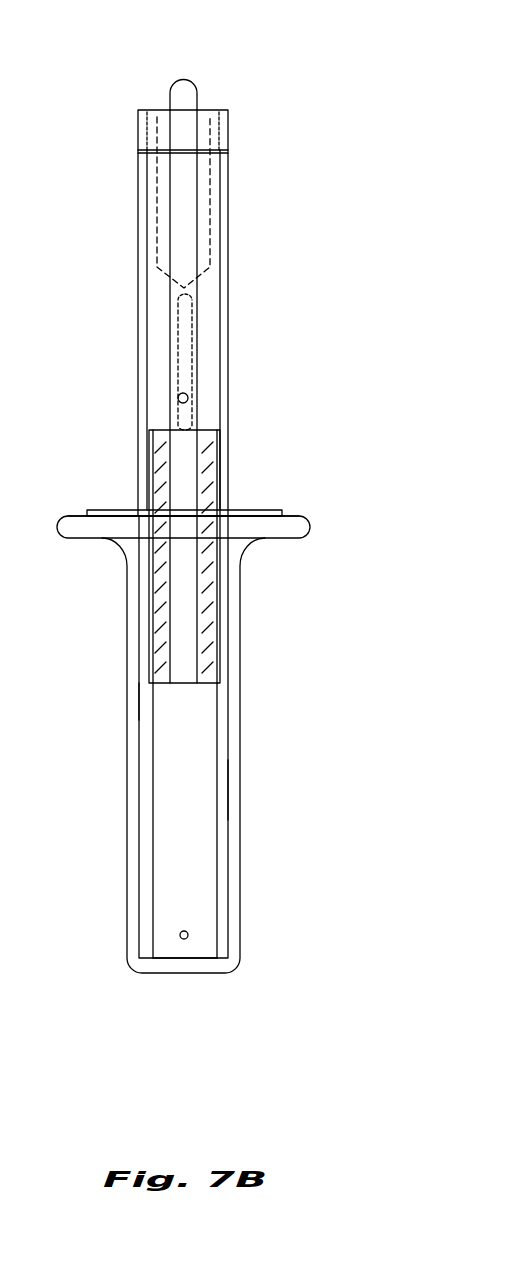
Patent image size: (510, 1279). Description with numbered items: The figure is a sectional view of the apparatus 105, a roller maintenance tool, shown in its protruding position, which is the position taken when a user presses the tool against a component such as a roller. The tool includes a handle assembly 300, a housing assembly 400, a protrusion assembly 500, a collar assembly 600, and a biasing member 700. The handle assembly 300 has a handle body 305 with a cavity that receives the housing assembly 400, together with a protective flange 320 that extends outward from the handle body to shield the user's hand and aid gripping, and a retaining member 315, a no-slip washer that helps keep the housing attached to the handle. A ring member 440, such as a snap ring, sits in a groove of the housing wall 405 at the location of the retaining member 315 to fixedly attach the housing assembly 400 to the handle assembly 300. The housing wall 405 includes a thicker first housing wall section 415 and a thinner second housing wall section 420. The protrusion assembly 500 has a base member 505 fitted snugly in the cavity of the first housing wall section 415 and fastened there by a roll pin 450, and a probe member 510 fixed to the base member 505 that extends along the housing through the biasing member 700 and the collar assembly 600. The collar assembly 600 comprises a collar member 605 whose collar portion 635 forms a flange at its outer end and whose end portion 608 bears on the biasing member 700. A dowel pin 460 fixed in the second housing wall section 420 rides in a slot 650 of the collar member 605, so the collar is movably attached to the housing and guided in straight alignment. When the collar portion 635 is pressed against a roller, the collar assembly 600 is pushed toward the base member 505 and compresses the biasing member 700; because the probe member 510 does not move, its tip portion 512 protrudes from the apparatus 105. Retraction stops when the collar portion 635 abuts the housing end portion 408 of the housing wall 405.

The apparatus 105 is at (117, 97).
The tip portion 512 is at (184, 98).
The collar assembly 600 is at (222, 123).
The housing end portion 408 is at (222, 152).
The collar portion 635 is at (148, 127).
The collar member 605 is at (148, 182).
The housing wall 405 is at (146, 282).
The probe member 510 is at (190, 230).
The slot 650 is at (184, 327).
The dowel pin 460 is at (178, 397).
The second housing wall section 420 is at (228, 390).
The end portion 608 is at (152, 445).
The biasing member 700 is at (207, 446).
The ring member 440 is at (140, 508).
The retaining member 315 is at (255, 513).
The protective flange 320 is at (298, 528).
The housing assembly 400 is at (145, 699).
The handle assembly 300 is at (135, 737).
The base member 505 is at (163, 791).
The handle body 305 is at (127, 815).
The first housing wall section 415 is at (226, 790).
The protrusion assembly 500 is at (160, 878).
The roll pin 450 is at (180, 934).